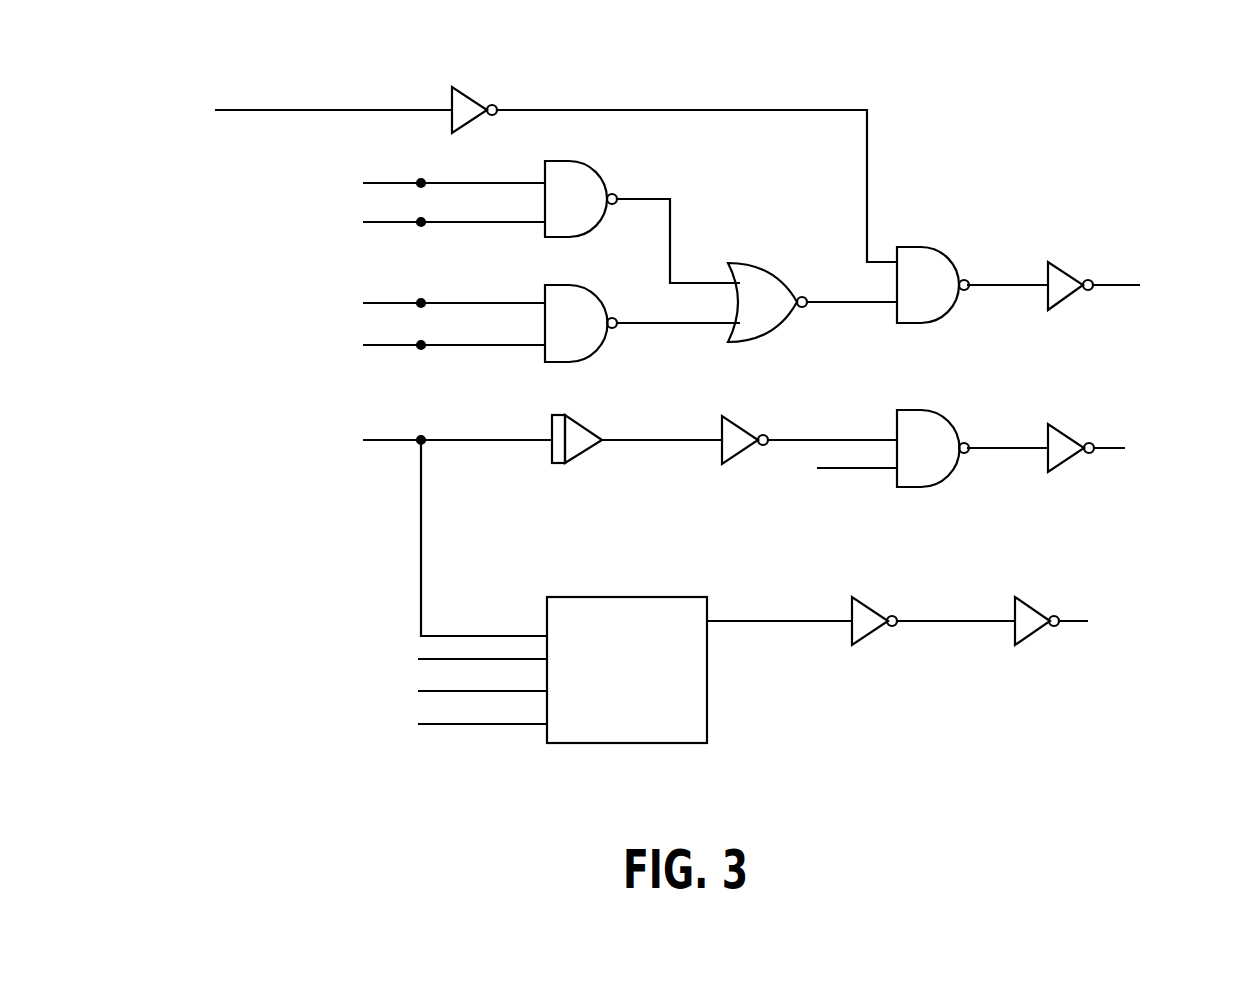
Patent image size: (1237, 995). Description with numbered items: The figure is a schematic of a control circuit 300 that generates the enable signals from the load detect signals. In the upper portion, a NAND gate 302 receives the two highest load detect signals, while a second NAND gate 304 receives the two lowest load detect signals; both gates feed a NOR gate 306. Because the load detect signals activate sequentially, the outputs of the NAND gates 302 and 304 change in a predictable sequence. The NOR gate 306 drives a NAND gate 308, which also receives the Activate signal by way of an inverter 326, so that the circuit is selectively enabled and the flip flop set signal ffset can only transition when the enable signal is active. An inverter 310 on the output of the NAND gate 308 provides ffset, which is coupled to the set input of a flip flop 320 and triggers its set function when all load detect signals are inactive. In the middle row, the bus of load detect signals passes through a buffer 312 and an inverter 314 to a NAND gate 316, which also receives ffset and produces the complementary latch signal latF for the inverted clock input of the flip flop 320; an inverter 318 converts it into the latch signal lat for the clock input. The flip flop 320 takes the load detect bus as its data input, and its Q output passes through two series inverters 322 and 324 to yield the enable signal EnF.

The control circuit 300 is at (898, 30).
The NAND gate 302 is at (585, 168).
The NAND gate 304 is at (570, 290).
The NOR gate 306 is at (760, 265).
The NAND gate 308 is at (940, 255).
The inverter 310 is at (1065, 266).
The buffer 312 is at (580, 420).
The inverter 314 is at (740, 421).
The NAND gate 316 is at (930, 415).
The inverter 318 is at (1060, 427).
The flip flop 320 is at (636, 597).
The inverter 322 is at (870, 601).
The inverter 324 is at (1032, 605).
The inverter 326 is at (469, 94).